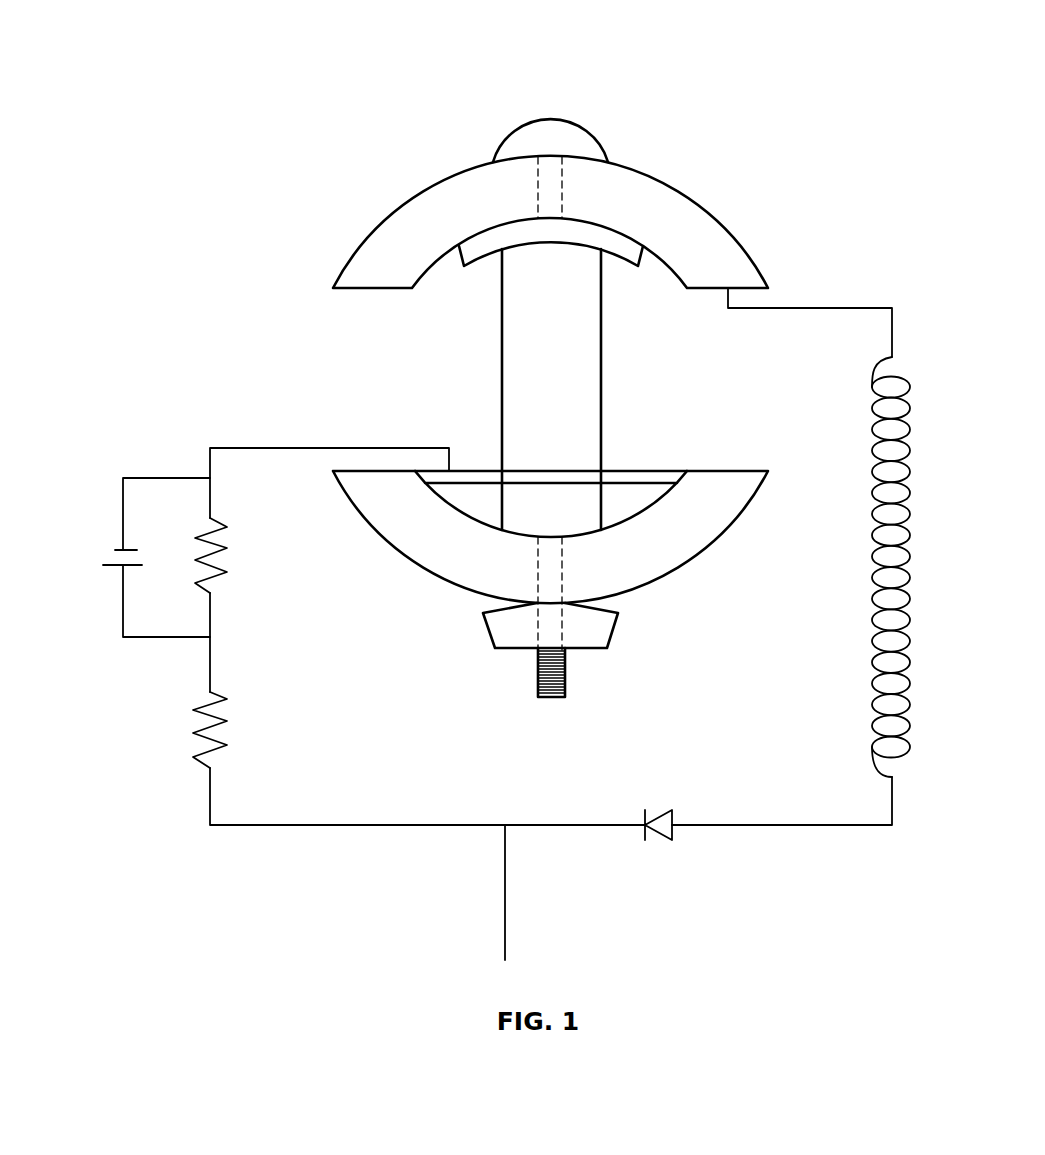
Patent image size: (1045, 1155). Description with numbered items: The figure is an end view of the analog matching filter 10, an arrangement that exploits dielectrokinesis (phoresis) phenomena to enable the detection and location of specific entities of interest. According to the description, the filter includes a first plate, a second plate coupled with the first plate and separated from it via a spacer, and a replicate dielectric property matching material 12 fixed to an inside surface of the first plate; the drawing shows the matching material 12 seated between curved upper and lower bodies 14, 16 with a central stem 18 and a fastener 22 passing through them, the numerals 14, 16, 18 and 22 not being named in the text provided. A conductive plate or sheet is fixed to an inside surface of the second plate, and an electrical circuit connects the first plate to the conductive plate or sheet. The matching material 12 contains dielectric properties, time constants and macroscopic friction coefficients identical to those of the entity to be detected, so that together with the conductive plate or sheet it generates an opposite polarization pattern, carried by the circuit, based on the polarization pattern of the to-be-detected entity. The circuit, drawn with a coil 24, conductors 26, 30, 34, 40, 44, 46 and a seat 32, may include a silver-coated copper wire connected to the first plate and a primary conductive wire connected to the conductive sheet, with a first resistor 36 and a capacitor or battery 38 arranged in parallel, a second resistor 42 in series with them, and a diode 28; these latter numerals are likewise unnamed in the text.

The analog matching filter 10 is at (818, 137).
The replicate dielectric property matching material 12 is at (522, 247).
The upper pole piece 14 is at (658, 210).
The lower pole piece 16 is at (677, 543).
The shaft 18 is at (502, 322).
The fastener/pin 22 is at (550, 188).
The coil 24 is at (870, 567).
The conductor 26 is at (795, 825).
The diode 28 is at (662, 840).
The conductor 30 is at (572, 824).
The seat 32 is at (655, 468).
The conductor 34 is at (280, 448).
The resistor 36 is at (220, 583).
The battery 38 is at (120, 557).
The conductor 40 is at (210, 662).
The resistor 42 is at (203, 725).
The conductor 44 is at (210, 793).
The ground lead 46 is at (505, 877).